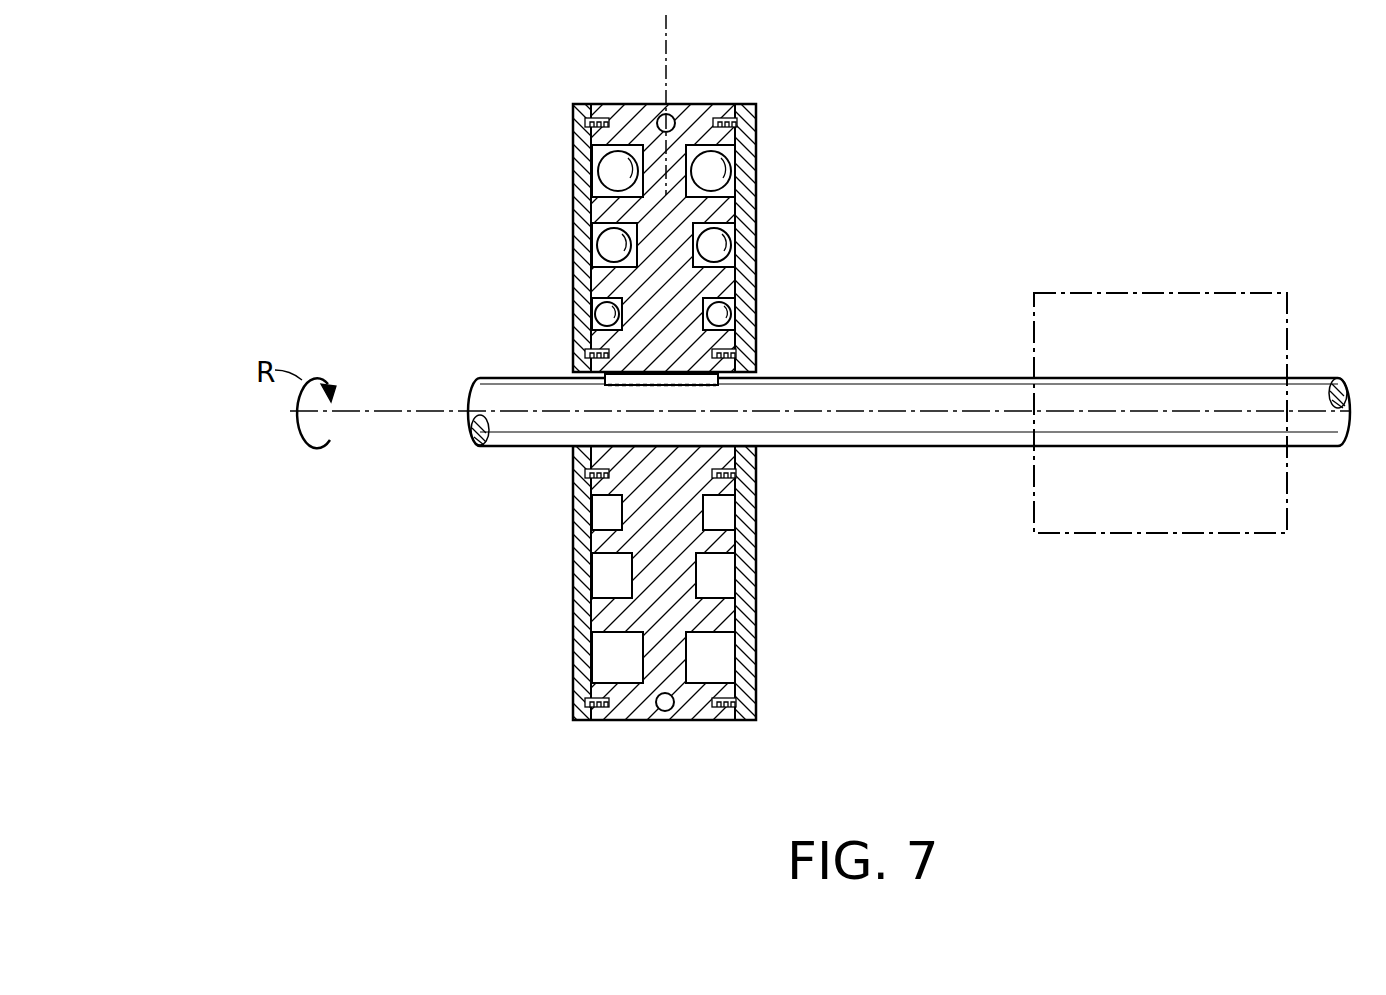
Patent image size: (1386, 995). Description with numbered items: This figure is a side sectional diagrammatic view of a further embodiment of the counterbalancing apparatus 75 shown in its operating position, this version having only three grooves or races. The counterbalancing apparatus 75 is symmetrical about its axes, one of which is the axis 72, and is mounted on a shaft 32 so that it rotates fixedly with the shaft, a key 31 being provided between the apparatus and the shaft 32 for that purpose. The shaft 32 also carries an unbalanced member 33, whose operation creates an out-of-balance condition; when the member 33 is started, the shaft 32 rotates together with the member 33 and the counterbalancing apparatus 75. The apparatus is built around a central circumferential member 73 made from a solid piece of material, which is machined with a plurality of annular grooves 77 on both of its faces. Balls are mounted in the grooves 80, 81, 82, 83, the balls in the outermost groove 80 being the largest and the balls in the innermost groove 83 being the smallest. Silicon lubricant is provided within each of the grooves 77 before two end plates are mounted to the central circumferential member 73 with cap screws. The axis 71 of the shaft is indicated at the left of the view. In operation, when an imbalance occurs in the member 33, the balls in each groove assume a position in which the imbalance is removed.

The key 31 is at (694, 378).
The shaft 32 is at (988, 380).
The unbalanced member 33 is at (1165, 292).
The axis of rotation 71 is at (397, 410).
The axis 72 is at (668, 33).
The central circumferential member 73 is at (724, 380).
The counterbalancing apparatus 75 is at (808, 217).
The annular grooves 77 is at (548, 177).
The outermost groove 80 is at (723, 190).
The groove 81 is at (580, 643).
The groove 82 is at (582, 124).
The innermost groove 83 is at (723, 341).